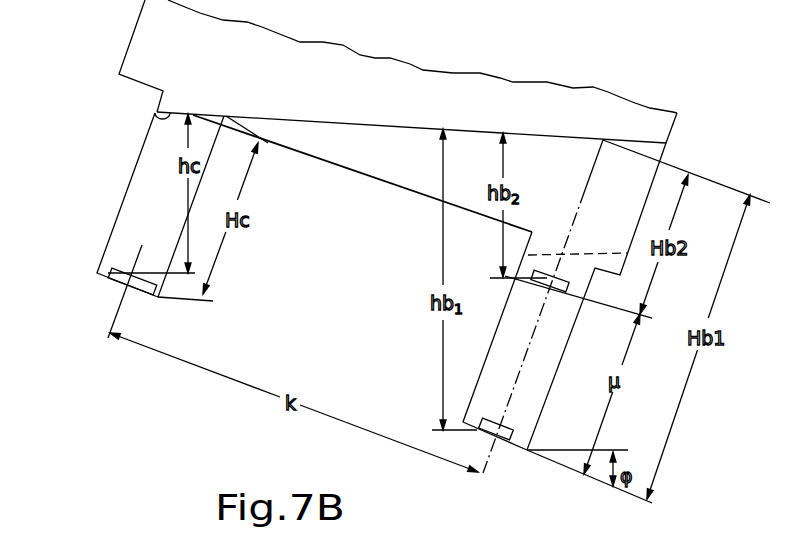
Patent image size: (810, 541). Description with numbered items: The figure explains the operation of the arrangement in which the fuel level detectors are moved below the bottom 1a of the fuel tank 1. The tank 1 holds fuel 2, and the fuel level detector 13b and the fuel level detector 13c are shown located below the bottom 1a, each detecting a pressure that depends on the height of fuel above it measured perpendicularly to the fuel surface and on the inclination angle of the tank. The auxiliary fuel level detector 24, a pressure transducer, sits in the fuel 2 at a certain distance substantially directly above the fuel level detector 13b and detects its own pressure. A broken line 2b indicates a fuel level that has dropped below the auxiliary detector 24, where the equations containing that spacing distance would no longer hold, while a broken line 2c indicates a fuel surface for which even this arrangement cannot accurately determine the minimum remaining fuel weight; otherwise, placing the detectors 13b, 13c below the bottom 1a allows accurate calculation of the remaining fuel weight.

The fuel tank 1 is at (675, 123).
The bottom of tank 1a is at (365, 173).
The fuel 2 is at (410, 163).
The broken line showing a fuel level 2b is at (340, 122).
The broken line showing a fuel surface 2c is at (156, 116).
The auxiliary fuel level detector 24 is at (553, 279).
The fuel level detector 13b is at (502, 440).
The fuel level detector 13c is at (112, 279).